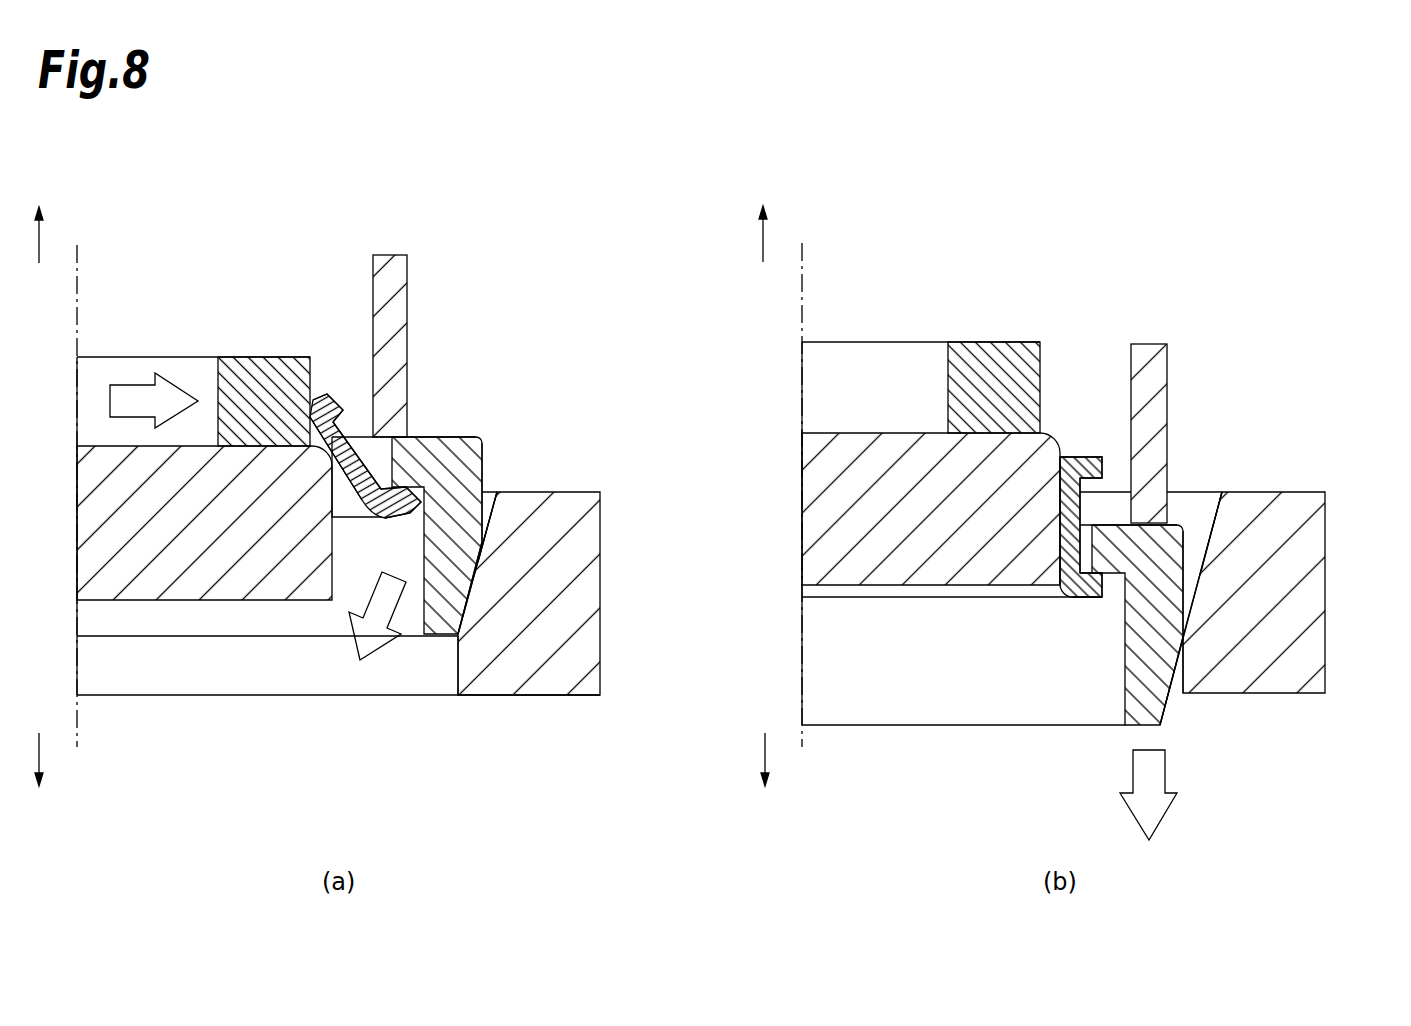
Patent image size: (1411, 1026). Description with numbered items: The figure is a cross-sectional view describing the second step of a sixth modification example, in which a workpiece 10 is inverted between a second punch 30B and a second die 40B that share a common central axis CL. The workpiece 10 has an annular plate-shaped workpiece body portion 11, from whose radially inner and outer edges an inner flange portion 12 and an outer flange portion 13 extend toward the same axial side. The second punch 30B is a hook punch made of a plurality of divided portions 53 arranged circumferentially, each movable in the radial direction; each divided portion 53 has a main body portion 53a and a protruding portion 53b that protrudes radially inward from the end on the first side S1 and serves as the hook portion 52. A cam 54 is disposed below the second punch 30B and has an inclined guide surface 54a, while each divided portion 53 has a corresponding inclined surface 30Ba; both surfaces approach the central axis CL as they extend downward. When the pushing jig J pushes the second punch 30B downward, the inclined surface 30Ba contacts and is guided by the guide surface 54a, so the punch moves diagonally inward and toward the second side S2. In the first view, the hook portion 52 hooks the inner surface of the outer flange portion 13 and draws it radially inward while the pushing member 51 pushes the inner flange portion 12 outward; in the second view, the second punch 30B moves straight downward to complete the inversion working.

The workpiece 10 is at (352, 507).
The workpiece body portion 11 is at (366, 447).
The inner flange portion 12 is at (334, 396).
The outer flange portion 13 is at (410, 497).
The second punch 30B is at (462, 437).
The inclined surface 30Ba is at (482, 563).
The second die 40B is at (155, 573).
The pushing member 51 is at (266, 383).
The hook portion 52 is at (787, 571).
The divided portion 53 is at (482, 470).
The main body portion 53a is at (487, 488).
The protruding portion 53b is at (437, 437).
The cam 54 is at (527, 670).
The guide surface 54a is at (462, 584).
The pushing jig J is at (388, 273).
The central axis CL is at (78, 278).
The first side S1 is at (40, 236).
The second side S2 is at (40, 755).